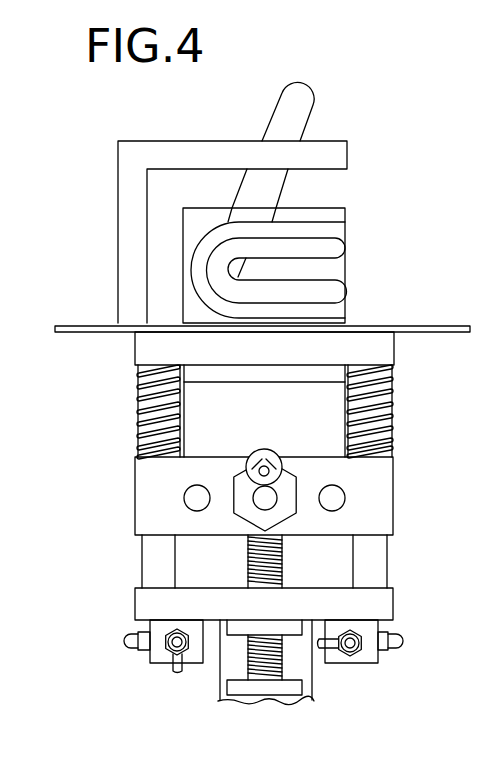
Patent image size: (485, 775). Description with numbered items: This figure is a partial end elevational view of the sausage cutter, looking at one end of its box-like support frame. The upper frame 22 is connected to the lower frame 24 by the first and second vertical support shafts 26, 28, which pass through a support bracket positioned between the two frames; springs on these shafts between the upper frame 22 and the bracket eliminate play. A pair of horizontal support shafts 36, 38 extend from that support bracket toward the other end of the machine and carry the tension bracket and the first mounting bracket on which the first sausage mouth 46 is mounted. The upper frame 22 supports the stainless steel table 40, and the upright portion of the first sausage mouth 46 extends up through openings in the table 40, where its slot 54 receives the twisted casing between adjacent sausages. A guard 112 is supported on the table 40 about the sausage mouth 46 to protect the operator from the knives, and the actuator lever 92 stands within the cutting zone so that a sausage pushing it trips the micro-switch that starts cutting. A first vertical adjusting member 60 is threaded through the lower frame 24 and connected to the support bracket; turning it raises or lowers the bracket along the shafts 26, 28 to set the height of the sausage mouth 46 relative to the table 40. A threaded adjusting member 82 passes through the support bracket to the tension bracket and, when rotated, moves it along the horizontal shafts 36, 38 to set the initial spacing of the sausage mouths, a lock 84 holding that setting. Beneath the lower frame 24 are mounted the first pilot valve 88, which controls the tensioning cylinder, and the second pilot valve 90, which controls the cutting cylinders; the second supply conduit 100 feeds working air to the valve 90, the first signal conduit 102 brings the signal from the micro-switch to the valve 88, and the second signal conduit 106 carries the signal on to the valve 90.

The upper frame 22 is at (142, 348).
The lower frame 24 is at (143, 605).
The first vertical support shaft 26 is at (387, 563).
The second vertical support shaft 28 is at (142, 563).
The horizontal support shaft 36 is at (338, 498).
The horizontal support shaft 38 is at (187, 497).
The stainless steel table 40 is at (437, 326).
The first sausage mouth 46 is at (338, 217).
The slot 54 is at (325, 270).
The first vertical adjusting member 60 is at (248, 688).
The threaded adjusting member 82 is at (245, 508).
The lock 84 is at (283, 468).
The first pilot valve 88 is at (153, 658).
The second pilot valve 90 is at (380, 663).
The actuator lever 92 is at (310, 105).
The second supply conduit 100 is at (403, 633).
The first signal conduit 102 is at (175, 672).
The second signal conduit 106 is at (333, 653).
The guard 112 is at (128, 185).